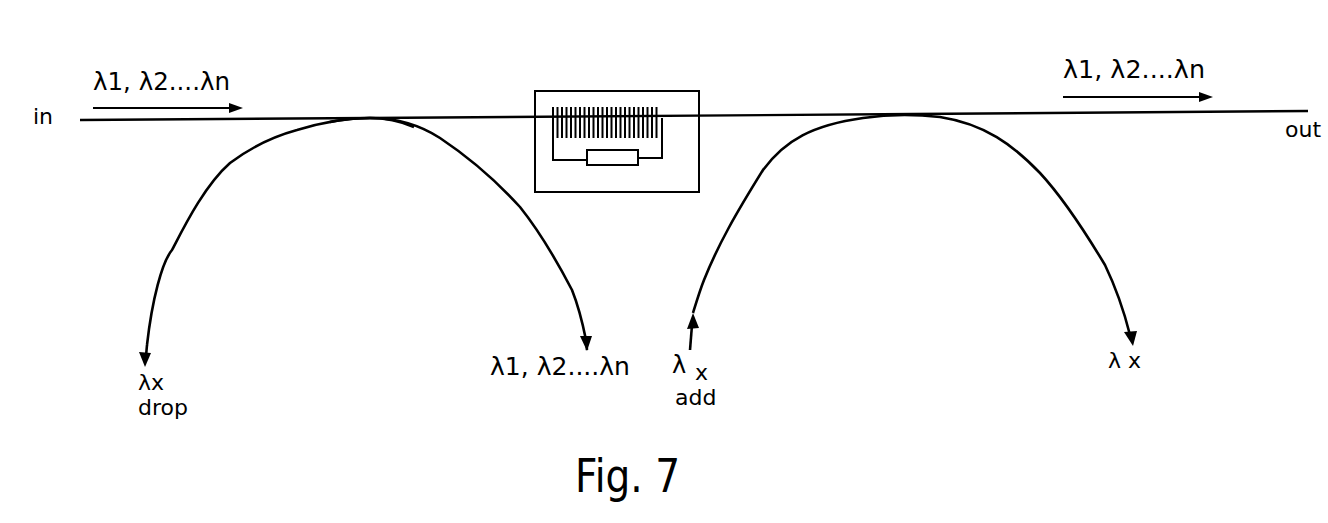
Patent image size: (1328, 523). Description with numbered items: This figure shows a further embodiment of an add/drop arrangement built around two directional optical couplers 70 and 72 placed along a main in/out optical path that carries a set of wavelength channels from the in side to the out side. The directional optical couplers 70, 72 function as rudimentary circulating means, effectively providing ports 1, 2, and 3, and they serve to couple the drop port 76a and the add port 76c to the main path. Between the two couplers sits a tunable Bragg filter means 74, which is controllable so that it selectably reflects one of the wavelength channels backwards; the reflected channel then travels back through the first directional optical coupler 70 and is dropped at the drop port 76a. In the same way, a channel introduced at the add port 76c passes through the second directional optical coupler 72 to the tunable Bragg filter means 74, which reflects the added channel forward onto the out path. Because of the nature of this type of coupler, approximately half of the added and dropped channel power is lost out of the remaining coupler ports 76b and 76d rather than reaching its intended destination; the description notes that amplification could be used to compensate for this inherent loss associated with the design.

The port 1 is at (224, 140).
The port 2 is at (641, 107).
The port 3 is at (366, 231).
The directional optical coupler 70 is at (362, 118).
The directional optical coupler 72 is at (893, 116).
The tunable Bragg filter means 74 is at (587, 92).
The drop port 76a is at (146, 342).
The port 76b is at (583, 326).
The add port 76c is at (698, 307).
The port 76d is at (1127, 320).